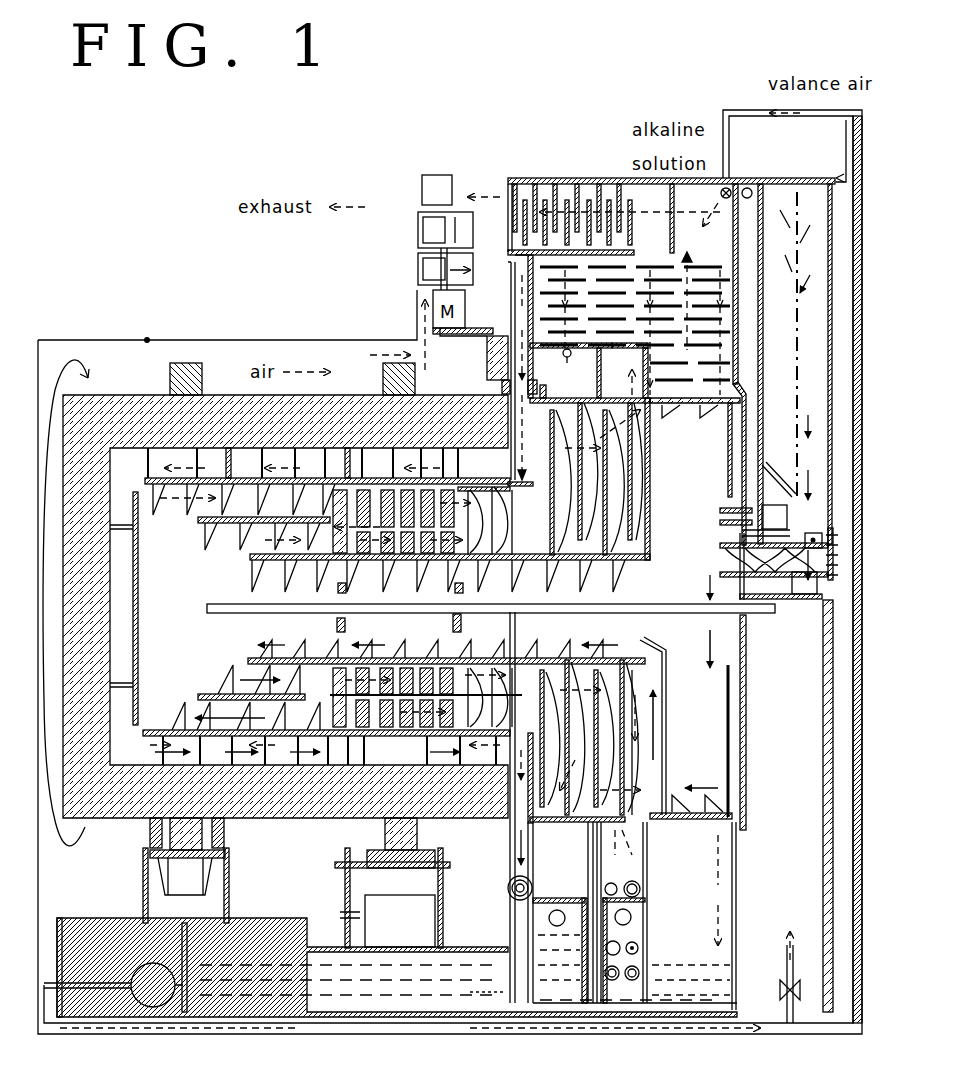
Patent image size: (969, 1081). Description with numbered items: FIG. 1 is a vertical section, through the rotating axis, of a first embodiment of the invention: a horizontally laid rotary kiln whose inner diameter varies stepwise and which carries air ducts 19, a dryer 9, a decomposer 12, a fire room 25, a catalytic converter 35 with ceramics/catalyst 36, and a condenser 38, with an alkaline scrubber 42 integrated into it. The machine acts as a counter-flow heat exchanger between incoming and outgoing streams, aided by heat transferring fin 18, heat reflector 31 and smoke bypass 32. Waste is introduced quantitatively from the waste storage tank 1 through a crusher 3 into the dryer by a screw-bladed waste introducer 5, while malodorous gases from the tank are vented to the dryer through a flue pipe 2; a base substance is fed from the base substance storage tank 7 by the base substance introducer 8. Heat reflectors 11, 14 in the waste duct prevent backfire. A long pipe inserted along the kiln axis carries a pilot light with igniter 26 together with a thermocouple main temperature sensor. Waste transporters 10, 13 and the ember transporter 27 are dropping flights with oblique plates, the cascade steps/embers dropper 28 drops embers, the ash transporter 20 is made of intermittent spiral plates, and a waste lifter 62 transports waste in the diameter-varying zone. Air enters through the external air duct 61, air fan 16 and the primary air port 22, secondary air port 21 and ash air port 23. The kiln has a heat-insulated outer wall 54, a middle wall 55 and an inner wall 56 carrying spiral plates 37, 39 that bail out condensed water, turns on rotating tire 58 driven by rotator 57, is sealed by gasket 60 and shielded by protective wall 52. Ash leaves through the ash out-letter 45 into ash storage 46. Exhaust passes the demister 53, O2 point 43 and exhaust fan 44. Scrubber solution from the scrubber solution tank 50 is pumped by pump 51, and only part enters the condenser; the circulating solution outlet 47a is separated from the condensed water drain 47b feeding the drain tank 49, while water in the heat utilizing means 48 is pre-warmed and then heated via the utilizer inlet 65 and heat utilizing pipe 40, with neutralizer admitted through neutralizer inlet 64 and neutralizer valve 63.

The waste storage tank 1 is at (775, 215).
The flue pipe 2 is at (797, 190).
The crusher 3 is at (771, 392).
The waste introducer 5 is at (722, 560).
The base substance storage tank 7 is at (742, 215).
The base substance introducer 8 is at (720, 515).
The dryer 9 is at (550, 585).
The waste transporter 10 is at (702, 410).
The heat reflector 11 is at (461, 628).
The decomposer 12 is at (419, 667).
The waste transporter 13 is at (440, 585).
The heat reflector 14 is at (345, 628).
The air fan 16 is at (430, 268).
The heat transferring fin 18 is at (522, 268).
The air duct 19 is at (499, 469).
The ash transporter 20 is at (160, 463).
The secondary air port 21 is at (327, 525).
The primary air port 22 is at (285, 469).
The ash air port 23 is at (311, 716).
The fire room 25 is at (246, 586).
The pilot light with igniter 26 is at (212, 607).
The ember transporter 27 is at (245, 537).
The cascade steps/embers dropper 28 is at (446, 636).
The heat reflector 31 is at (140, 585).
The smoke bypass 32 is at (323, 650).
The catalytic converter 35 is at (401, 521).
The ceramics/catalyst 36 is at (378, 492).
The ash out-letting flight 37 is at (495, 537).
The condenser 38 is at (584, 741).
The condenser fin 39 is at (598, 527).
The heat utilizing pipe 40 is at (635, 912).
The alkaline scrubber 42 is at (643, 364).
The O2 43 is at (428, 185).
The exhaust fan 44 is at (430, 228).
The ash out-letter 45 is at (513, 886).
The ash storage 46 is at (520, 912).
The circulating solution outlet 47a is at (648, 850).
The condensed water drain 47b is at (646, 866).
The heat utilizing means 48 is at (634, 947).
The drain tank 49 is at (637, 965).
The scrubber solution tank 50 is at (397, 967).
The pump 51 is at (170, 958).
The protective wall 52 is at (147, 340).
The demister 53 is at (545, 190).
The outer wall 54 is at (118, 420).
The middle wall 55 is at (225, 480).
The inner wall 56 is at (303, 552).
The rotator 57 is at (296, 883).
The rotating tire 58 is at (198, 372).
The gasket 60 is at (500, 807).
The external air duct 61 is at (285, 581).
The waste lifter 62 is at (648, 643).
The neutralizer valve 63 is at (772, 998).
The neutralizer inlet 64 is at (712, 683).
The utilizer inlet 65 is at (571, 371).